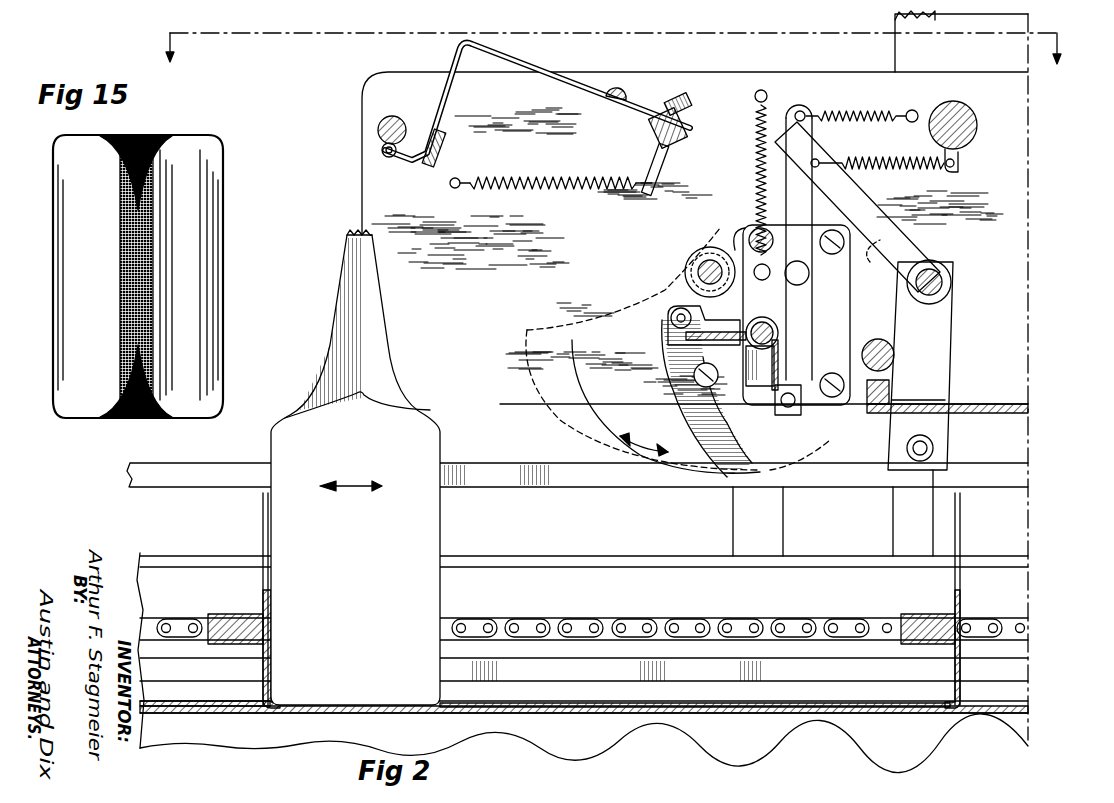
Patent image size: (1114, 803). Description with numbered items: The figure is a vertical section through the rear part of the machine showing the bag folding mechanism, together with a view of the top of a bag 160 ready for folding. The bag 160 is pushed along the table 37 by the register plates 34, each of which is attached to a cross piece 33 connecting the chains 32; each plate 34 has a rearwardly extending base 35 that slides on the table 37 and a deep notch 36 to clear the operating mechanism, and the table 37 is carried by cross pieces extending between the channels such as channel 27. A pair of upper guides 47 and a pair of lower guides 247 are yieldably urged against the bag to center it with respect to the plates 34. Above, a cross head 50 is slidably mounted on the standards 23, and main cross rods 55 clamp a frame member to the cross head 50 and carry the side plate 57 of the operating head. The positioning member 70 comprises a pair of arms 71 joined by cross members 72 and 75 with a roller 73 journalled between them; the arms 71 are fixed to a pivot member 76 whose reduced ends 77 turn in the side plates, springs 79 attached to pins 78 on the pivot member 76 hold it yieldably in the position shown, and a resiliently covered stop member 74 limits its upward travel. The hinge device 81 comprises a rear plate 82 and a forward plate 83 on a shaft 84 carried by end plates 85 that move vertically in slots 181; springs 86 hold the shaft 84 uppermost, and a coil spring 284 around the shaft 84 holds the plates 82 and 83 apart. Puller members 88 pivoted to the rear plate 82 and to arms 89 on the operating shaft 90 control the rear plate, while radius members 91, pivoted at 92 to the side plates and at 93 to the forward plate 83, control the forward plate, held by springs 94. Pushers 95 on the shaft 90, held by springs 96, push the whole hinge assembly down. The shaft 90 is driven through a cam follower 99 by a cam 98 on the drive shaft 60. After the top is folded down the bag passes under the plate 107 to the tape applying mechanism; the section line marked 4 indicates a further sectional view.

In FIG. 2, the section line 4- 4 is at (610, 48).
In FIG. 2, the standards 23 is at (895, 16).
In FIG. 2, the channel 27 is at (598, 562).
In FIG. 2, the chains 32 is at (683, 620).
In FIG. 2, the cross pieces 33 is at (218, 614).
In FIG. 2, the plate 34 is at (262, 598).
In FIG. 2, the base 35 is at (188, 710).
In FIG. 2, the notch 36 is at (263, 532).
In FIG. 2, the table 37 is at (676, 715).
In FIG. 2, the upper guides 47 is at (198, 470).
In FIG. 2, the cross head 50 is at (895, 52).
In FIG. 2, the main cross rods 55 is at (968, 130).
In FIG. 2, the side plate 57 is at (725, 80).
In FIG. 2, the drive shaft 60 is at (703, 265).
In FIG. 2, the positioning member 70 is at (536, 66).
In FIG. 2, the arms 71 is at (447, 86).
In FIG. 2, the cross member 72 is at (440, 147).
In FIG. 2, the roller 73 is at (382, 153).
In FIG. 2, the stop member 74 is at (378, 128).
In FIG. 2, the cross member 75 is at (632, 90).
In FIG. 2, the pivot member 76 is at (652, 128).
In FIG. 2, the reduced ends 77 is at (690, 128).
In FIG. 2, the pins 78 is at (652, 158).
In FIG. 2, the springs 79 is at (545, 180).
In FIG. 2, the hinge device 81 is at (752, 372).
In FIG. 2, the rear plate 82 is at (688, 345).
In FIG. 2, the forward plate 83 is at (770, 400).
In FIG. 2, the shaft 84 is at (760, 335).
In FIG. 2, the end plates 85 is at (748, 232).
In FIG. 2, the springs 86 is at (756, 143).
In FIG. 2, the puller members 88 is at (725, 468).
In FIG. 2, the arms 89 is at (948, 387).
In FIG. 2, the operating shaft 90 is at (952, 282).
In FIG. 2, the radius members 91 is at (850, 335).
In FIG. 2, the pivot 92 is at (812, 272).
In FIG. 2, the pivot 93 is at (805, 400).
In FIG. 2, the springs 94 is at (852, 111).
In FIG. 2, the pushers 95 is at (860, 200).
In FIG. 2, the springs 96 is at (890, 158).
In FIG. 2, the cam 98 is at (592, 418).
In FIG. 2, the cam follower 99 is at (905, 234).
In FIG. 2, the plate 107 is at (975, 415).
In FIG. 15, the bag 160 is at (222, 268).
In FIG. 2, the bag 160 is at (440, 532).
In FIG. 2, the slots 181 is at (660, 412).
In FIG. 2, the lower guides 247 is at (588, 676).
In FIG. 2, the coil spring 284 is at (775, 333).